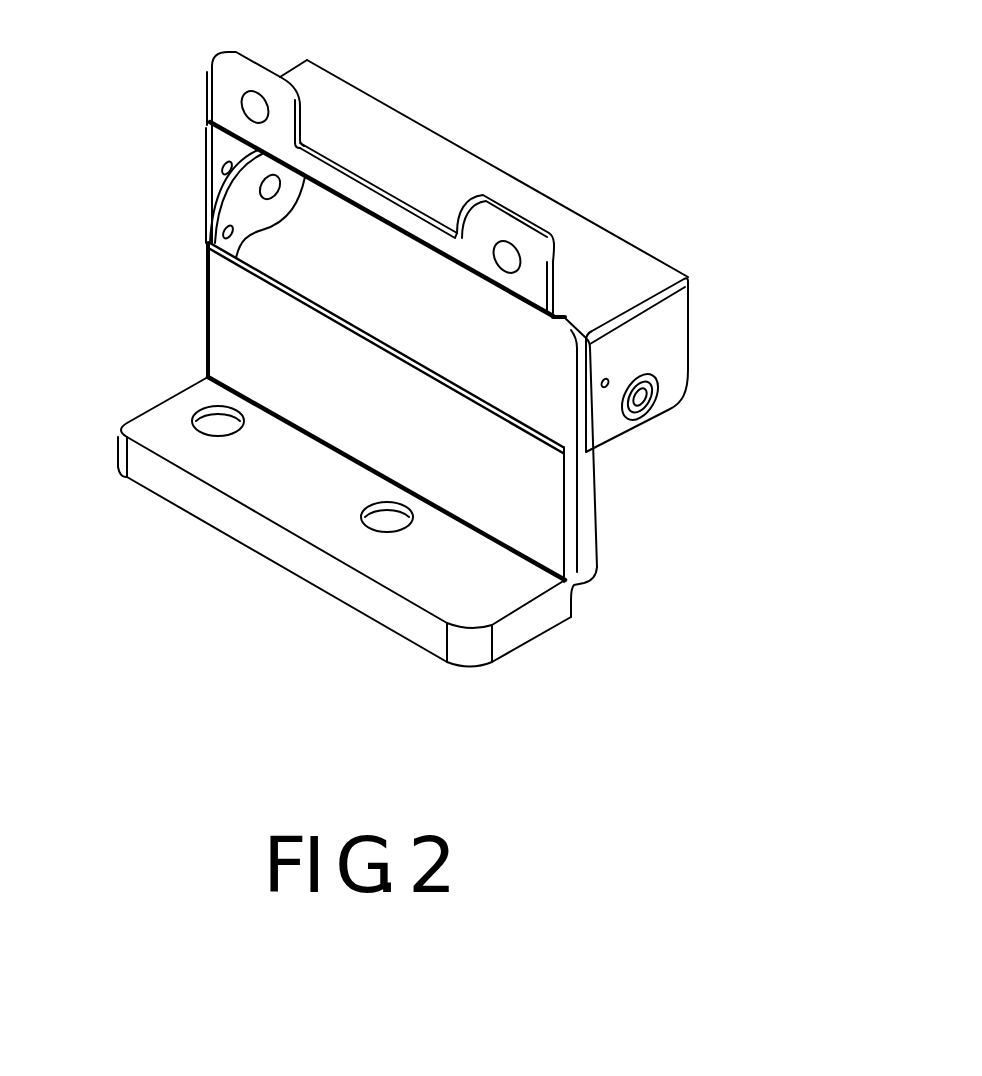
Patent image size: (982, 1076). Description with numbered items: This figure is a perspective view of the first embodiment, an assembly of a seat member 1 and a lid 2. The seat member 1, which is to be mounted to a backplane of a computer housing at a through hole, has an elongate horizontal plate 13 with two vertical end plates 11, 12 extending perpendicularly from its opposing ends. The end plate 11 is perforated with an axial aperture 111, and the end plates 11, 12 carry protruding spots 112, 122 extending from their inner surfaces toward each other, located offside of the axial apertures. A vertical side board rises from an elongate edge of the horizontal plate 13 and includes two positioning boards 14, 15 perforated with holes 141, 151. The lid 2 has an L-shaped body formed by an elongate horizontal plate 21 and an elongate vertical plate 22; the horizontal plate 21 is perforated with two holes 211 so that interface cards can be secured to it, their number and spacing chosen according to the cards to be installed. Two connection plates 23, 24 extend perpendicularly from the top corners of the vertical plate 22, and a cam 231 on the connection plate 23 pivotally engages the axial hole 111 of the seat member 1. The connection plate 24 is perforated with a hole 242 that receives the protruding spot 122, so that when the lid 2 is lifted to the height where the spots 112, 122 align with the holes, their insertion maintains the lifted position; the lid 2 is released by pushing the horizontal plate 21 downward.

The seat member 1 is at (446, 271).
The vertical end plate 11 is at (665, 343).
The axial aperture 111 is at (653, 385).
The protruding spot 112 is at (613, 388).
The vertical end plate 12 is at (208, 207).
The protruding spot 122 is at (224, 172).
The elongate horizontal plate 13 is at (408, 137).
The positioning board 14 is at (233, 78).
The hole 141 is at (257, 117).
The positioning board 15 is at (503, 227).
The hole 151 is at (507, 260).
The lid 2 is at (416, 435).
The elongate horizontal plate 21 is at (305, 568).
The hole 211 is at (217, 422).
The elongate vertical plate 22 is at (400, 390).
The connection plate 23 is at (563, 417).
The cam 231 is at (657, 407).
The connection plate 24 is at (252, 210).
The hole 242 is at (208, 263).